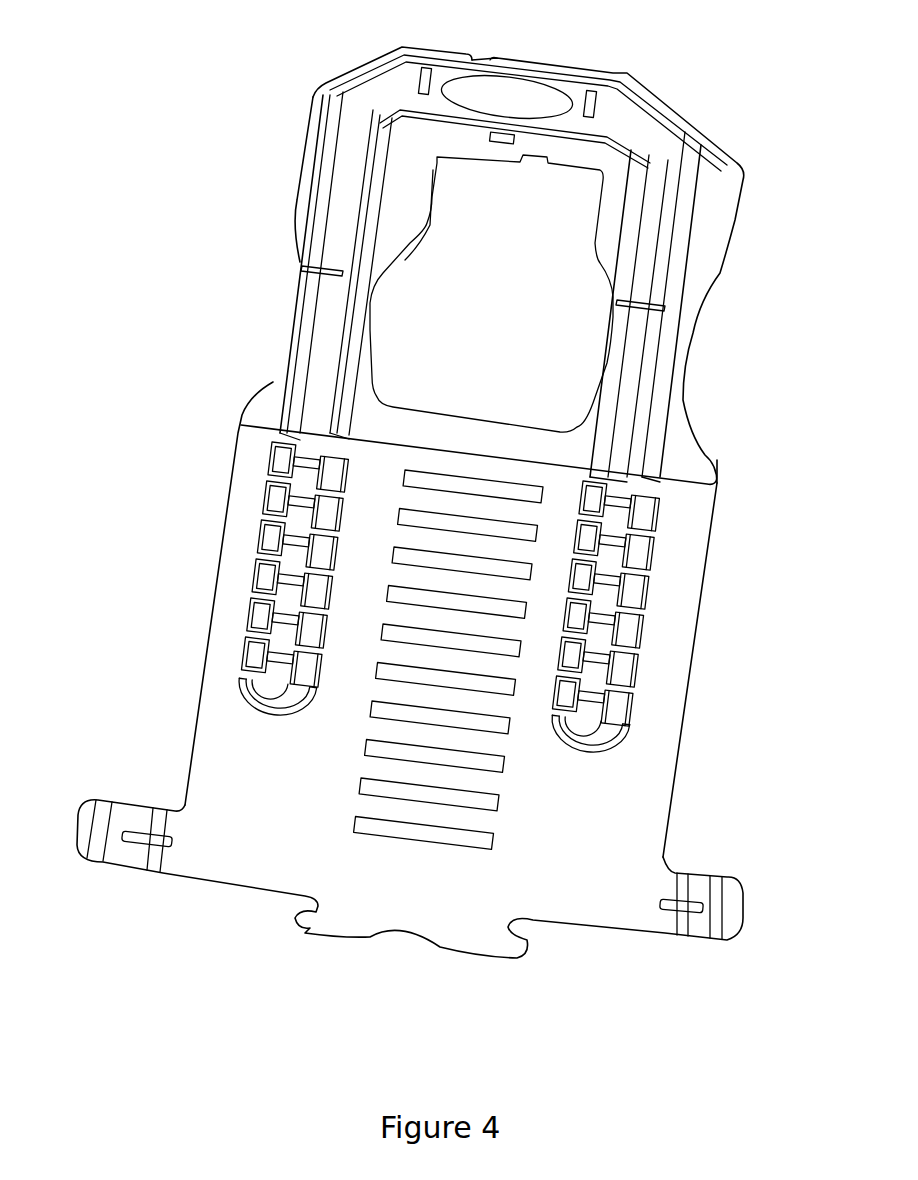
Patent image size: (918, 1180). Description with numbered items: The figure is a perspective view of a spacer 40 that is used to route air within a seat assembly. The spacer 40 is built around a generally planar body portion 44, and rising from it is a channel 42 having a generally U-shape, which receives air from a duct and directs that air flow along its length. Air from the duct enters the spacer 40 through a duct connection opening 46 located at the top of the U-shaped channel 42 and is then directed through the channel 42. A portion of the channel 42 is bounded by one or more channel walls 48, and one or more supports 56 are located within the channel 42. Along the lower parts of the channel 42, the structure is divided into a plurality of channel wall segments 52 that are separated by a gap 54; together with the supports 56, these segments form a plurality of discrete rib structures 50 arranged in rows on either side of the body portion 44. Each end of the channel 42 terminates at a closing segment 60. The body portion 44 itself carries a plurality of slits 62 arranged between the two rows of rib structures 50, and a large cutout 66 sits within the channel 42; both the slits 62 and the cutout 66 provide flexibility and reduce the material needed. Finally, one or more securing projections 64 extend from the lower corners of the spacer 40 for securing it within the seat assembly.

The spacer 40 is at (222, 190).
The channel 42 is at (352, 172).
The body portion 44 is at (210, 782).
The duct connection opening 46 is at (497, 88).
The channel wall 48 is at (690, 248).
The rib structure 50 is at (255, 478).
The channel wall segment 52 is at (265, 590).
The gap 54 is at (622, 680).
The support 56 is at (300, 268).
The closing segment 60 is at (600, 750).
The slit 62 is at (378, 748).
The securing projection 64 is at (300, 933).
The cutout 66 is at (438, 348).